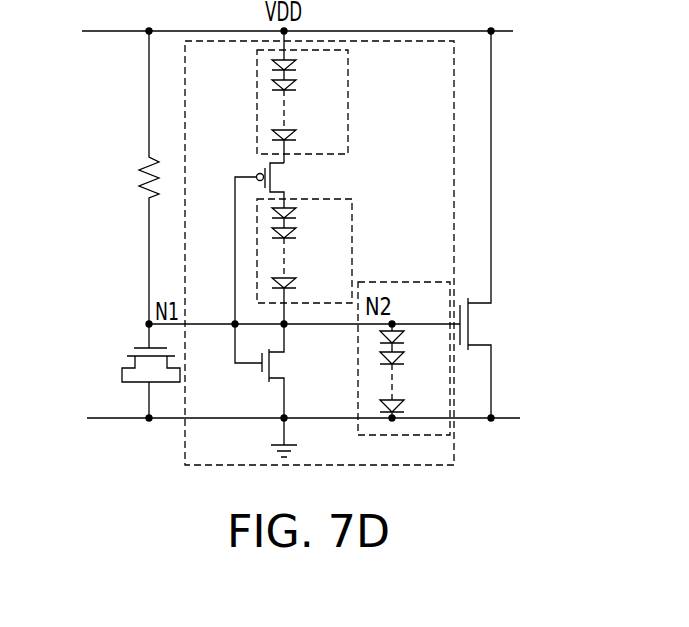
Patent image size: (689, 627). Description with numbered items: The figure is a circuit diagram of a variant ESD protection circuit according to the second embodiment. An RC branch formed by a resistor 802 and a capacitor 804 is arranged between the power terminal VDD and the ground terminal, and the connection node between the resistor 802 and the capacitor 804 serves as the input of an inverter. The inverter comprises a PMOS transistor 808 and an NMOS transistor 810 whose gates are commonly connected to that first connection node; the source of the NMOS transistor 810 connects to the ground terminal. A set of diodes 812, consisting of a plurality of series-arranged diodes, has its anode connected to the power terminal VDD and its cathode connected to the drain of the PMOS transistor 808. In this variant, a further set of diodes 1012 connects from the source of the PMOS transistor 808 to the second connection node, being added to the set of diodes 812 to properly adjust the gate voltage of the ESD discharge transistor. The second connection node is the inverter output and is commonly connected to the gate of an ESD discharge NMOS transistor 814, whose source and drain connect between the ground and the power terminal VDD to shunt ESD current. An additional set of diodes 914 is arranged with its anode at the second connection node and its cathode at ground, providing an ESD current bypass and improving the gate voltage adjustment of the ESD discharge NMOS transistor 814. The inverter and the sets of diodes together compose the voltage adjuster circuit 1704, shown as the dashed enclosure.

The resistor 802 is at (140, 183).
The capacitor 804 is at (133, 358).
The PMOS transistor 808 is at (272, 175).
The NMOS transistor 810 is at (258, 368).
The set of diodes 812 is at (349, 118).
The ESD discharge NMOS transistor 814 is at (472, 323).
The set of diodes 914 is at (451, 437).
The set of diodes 1012 is at (353, 247).
The voltage adjuster circuit 1704 is at (185, 452).